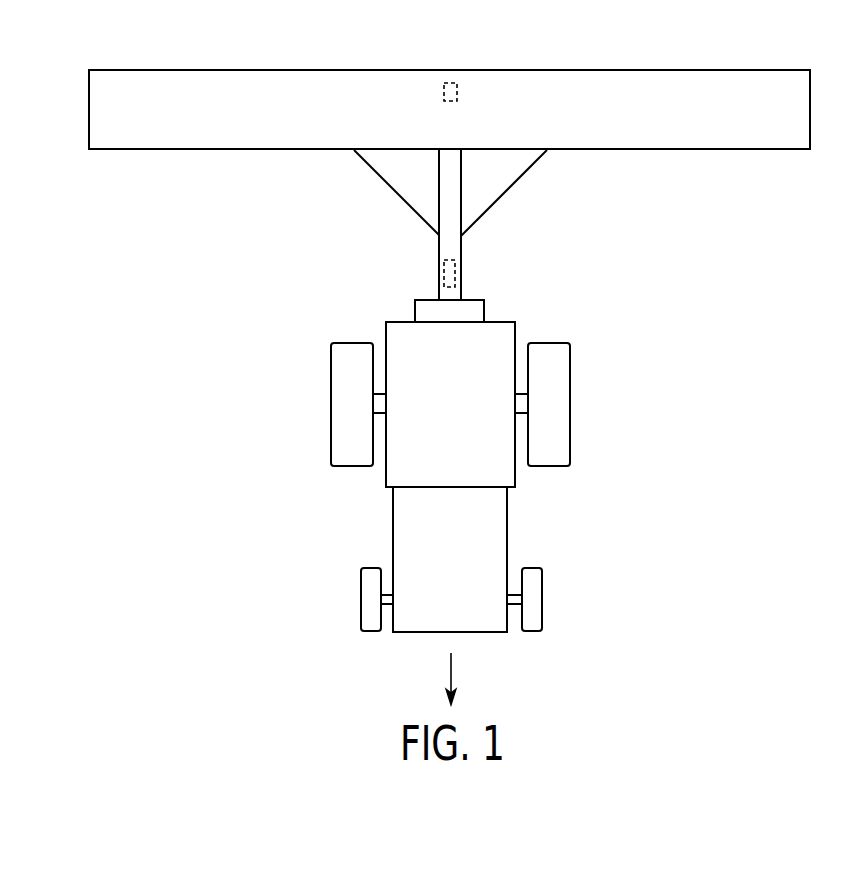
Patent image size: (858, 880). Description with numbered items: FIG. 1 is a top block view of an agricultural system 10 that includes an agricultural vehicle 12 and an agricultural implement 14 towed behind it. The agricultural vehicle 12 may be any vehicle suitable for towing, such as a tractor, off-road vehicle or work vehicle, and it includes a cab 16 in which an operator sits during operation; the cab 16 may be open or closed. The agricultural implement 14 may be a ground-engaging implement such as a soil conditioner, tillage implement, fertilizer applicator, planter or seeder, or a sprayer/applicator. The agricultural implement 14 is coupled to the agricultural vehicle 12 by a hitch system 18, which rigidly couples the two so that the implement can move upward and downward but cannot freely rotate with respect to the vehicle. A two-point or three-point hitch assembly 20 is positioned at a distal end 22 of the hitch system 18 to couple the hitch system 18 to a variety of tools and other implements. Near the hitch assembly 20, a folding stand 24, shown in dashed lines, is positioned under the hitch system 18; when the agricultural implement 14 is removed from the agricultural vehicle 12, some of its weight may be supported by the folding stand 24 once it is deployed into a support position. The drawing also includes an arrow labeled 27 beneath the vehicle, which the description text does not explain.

The agricultural system 10 is at (713, 330).
The agricultural vehicle 12 is at (393, 541).
The agricultural implement 14 is at (111, 118).
The cab 16 is at (462, 416).
The hitch system 18 is at (450, 222).
The hitch assembly 20 is at (415, 307).
The distal end 22 is at (475, 287).
The folding stand 24 is at (442, 90).
The direction of travel 27 is at (452, 675).